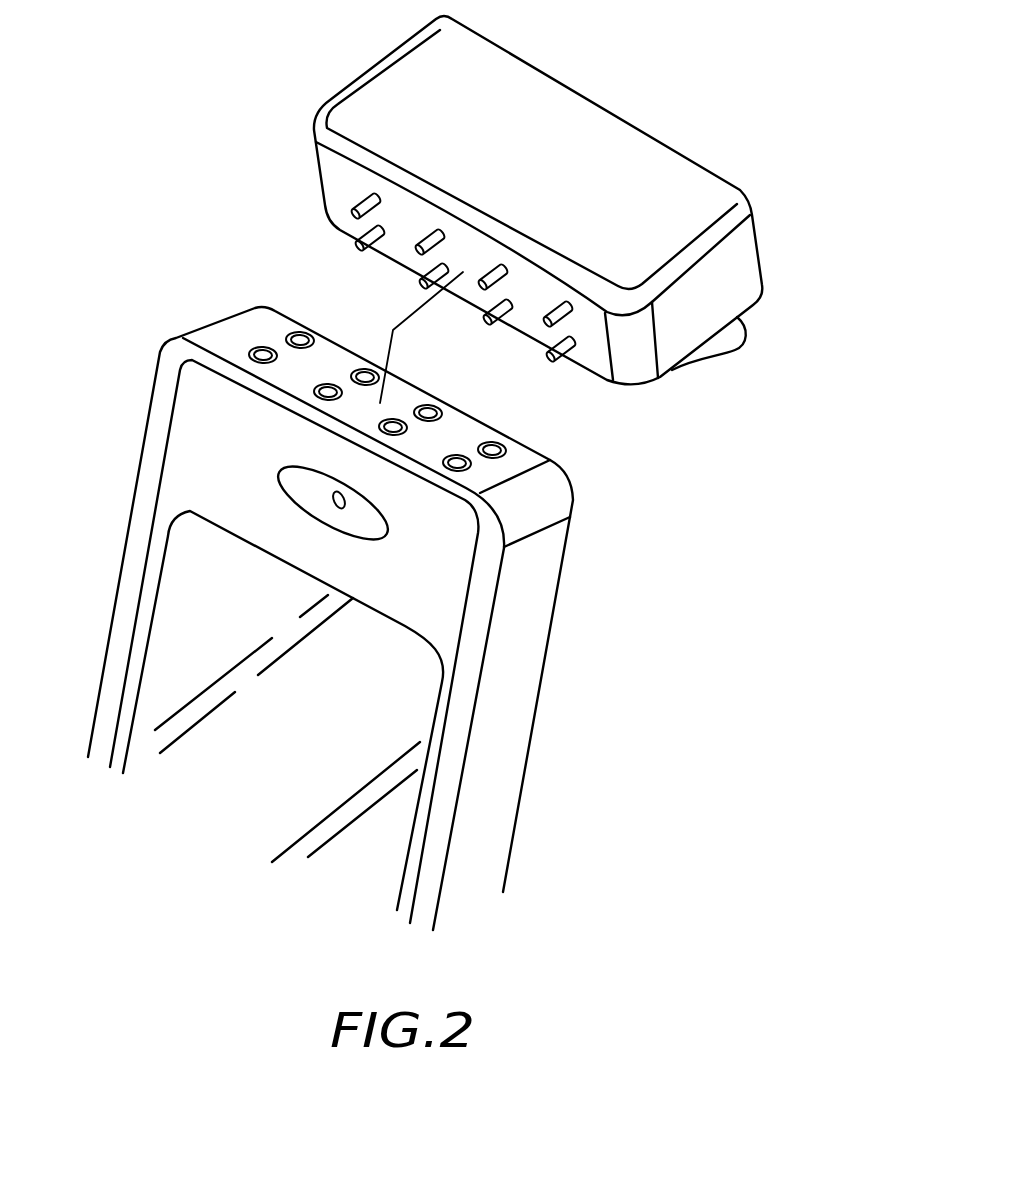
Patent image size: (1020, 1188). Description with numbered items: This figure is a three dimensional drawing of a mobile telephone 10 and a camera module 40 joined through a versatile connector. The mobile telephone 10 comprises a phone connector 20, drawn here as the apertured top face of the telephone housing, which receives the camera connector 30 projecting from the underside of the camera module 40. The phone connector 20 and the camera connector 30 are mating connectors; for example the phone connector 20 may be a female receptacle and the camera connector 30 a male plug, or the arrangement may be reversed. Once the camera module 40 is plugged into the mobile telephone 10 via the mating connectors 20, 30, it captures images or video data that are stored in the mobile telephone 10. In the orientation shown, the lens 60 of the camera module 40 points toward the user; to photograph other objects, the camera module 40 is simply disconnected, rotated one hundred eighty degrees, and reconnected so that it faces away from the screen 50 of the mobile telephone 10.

The mobile telephone 10 is at (545, 555).
The phone connector 20 is at (237, 328).
The camera connector 30 is at (650, 378).
The camera module 40 is at (630, 187).
The screen 50 is at (190, 558).
The lens 60 is at (712, 352).